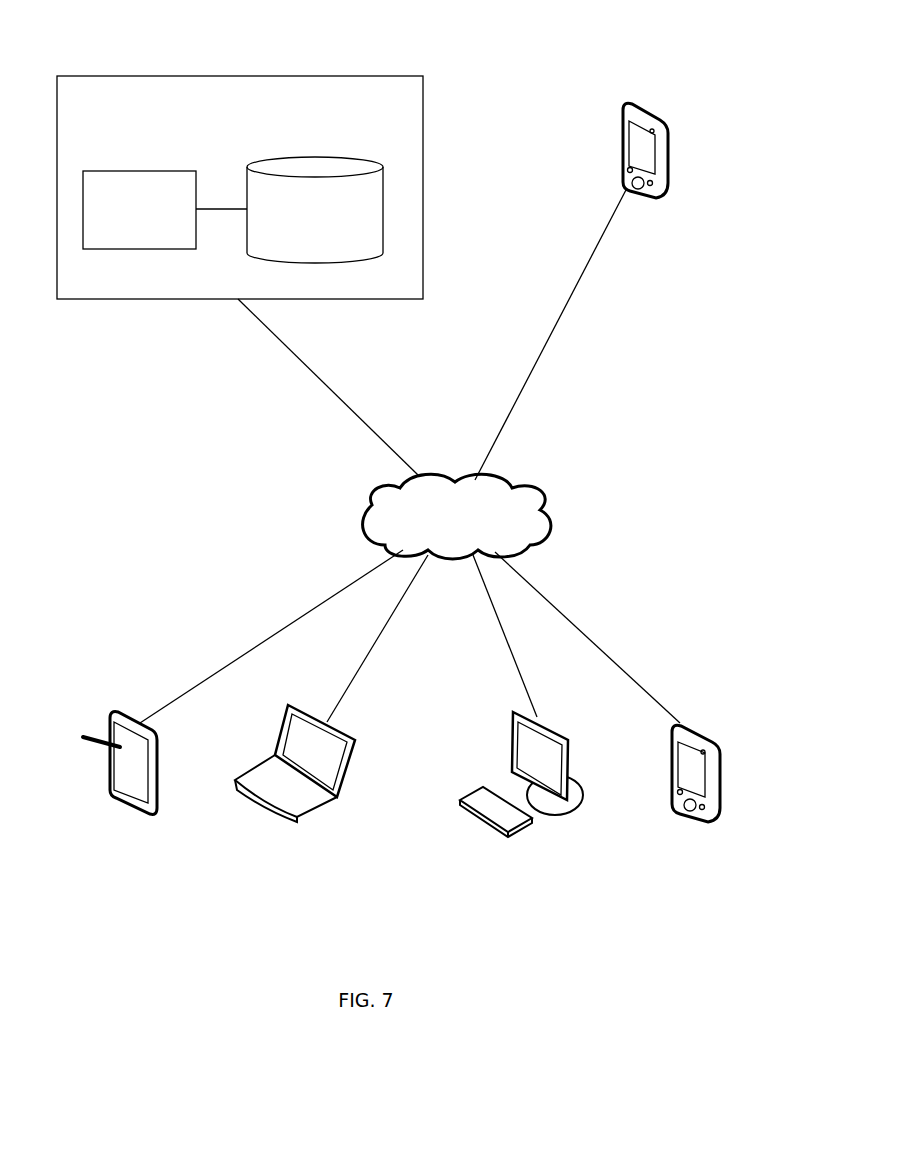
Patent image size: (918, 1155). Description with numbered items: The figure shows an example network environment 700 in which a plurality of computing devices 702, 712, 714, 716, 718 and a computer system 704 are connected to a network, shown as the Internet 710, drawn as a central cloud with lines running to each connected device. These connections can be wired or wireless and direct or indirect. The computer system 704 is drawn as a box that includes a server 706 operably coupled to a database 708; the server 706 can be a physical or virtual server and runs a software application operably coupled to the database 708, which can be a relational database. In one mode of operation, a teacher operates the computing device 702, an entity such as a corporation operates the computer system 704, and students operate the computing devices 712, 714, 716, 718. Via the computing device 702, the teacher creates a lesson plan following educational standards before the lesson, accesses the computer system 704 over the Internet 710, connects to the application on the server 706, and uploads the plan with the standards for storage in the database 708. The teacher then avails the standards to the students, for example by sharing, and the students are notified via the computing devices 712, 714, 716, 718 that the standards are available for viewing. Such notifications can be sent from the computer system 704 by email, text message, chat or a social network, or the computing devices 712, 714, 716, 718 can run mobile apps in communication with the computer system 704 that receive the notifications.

The network environment 700 is at (518, 1011).
The computing device 702 is at (669, 159).
The computer system 704 is at (240, 254).
The server 706 is at (124, 236).
The database 708 is at (298, 238).
The Internet 710 is at (548, 520).
The computing device 712 is at (148, 822).
The computing device 714 is at (295, 822).
The computing device 716 is at (568, 815).
The computing device 718 is at (708, 825).